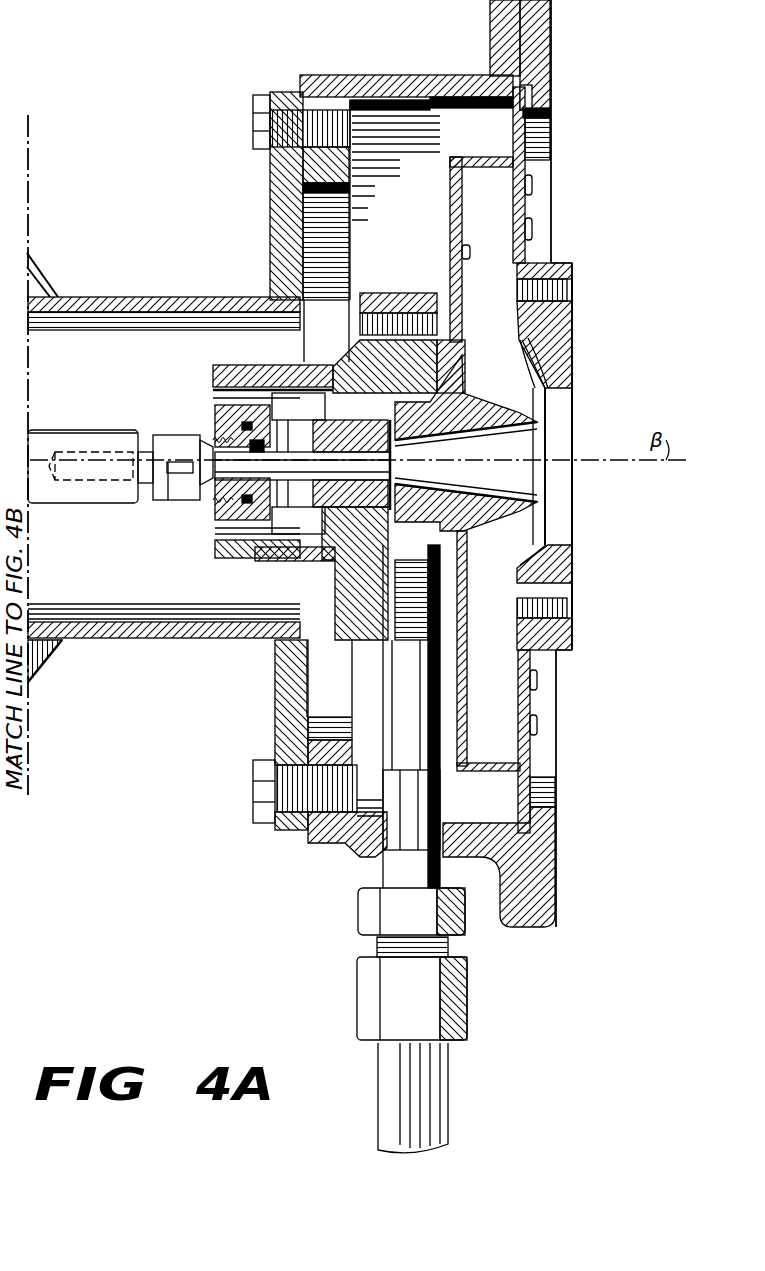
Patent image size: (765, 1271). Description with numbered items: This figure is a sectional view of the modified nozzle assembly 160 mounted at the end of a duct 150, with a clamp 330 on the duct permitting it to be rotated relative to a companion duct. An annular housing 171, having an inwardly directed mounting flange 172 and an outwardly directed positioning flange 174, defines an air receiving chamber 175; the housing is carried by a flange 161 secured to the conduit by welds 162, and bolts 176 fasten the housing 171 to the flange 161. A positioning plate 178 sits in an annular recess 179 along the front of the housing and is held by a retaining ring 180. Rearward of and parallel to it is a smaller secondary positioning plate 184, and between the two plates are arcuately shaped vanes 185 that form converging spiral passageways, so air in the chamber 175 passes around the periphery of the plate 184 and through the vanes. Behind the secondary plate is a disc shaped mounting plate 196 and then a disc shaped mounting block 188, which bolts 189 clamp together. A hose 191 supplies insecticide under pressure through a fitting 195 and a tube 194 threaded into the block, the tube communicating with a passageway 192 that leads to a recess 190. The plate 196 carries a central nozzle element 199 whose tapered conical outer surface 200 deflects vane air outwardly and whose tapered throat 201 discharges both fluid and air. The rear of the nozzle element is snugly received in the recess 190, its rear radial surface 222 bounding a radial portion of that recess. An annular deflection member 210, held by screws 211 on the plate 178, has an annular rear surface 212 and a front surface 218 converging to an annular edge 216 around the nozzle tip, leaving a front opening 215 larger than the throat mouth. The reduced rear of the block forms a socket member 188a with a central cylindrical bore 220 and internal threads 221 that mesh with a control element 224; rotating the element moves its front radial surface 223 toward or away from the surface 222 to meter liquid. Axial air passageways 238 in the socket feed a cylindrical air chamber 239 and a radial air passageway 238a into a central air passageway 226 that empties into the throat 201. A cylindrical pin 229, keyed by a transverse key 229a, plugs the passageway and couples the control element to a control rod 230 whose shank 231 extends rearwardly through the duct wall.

The duct 150 is at (200, 297).
The nozzle assembly 160 is at (530, 928).
The flange 161 is at (274, 230).
The welds 162 is at (272, 283).
The annular housing 171 is at (434, 78).
The inwardly directed mounting flange 172 is at (334, 164).
The outwardly directed positioning flange 174 is at (490, 34).
The air receiving chamber 175 is at (395, 160).
The bolts 176 is at (253, 126).
The positioning plate 178 is at (550, 136).
The annular recess 179 is at (536, 94).
The retaining ring 180 is at (548, 52).
The secondary positioning plate 184 is at (450, 266).
The vanes 185 is at (496, 507).
The mounting block 188 is at (390, 292).
The socket member 188a is at (282, 572).
The bolts 189 is at (398, 294).
The recess 190 is at (360, 354).
The hose 191 is at (444, 1098).
The passageway 192 is at (450, 538).
The tube 194 is at (394, 676).
The fitting 195 is at (358, 910).
The mounting plate 196 is at (462, 364).
The nozzle element 199 is at (466, 462).
The tapered conical outer surface 200 is at (536, 386).
The throat 201 is at (530, 482).
The deflection member 210 is at (570, 318).
The screws 211 is at (566, 280).
The annular rear surface 212 is at (538, 542).
The front opening 215 is at (540, 528).
The annular edge 216 is at (540, 408).
The front surface 218 is at (558, 348).
The central cylindrical bore 220 is at (330, 507).
The internal threads 221 is at (210, 430).
The rear radial surface 222 is at (404, 448).
The front radial surface 223 is at (394, 476).
The control element 224 is at (220, 508).
The central air passageway 226 is at (302, 466).
The cylindrical pin 229 is at (212, 434).
The transverse key 229a is at (168, 500).
The control rod 230 is at (88, 430).
The shank 231 is at (40, 430).
The air passageways 238 is at (216, 386).
The air passageway 238a is at (330, 422).
The cylindrical air chamber 239 is at (286, 368).
The clamp 330 is at (62, 282).